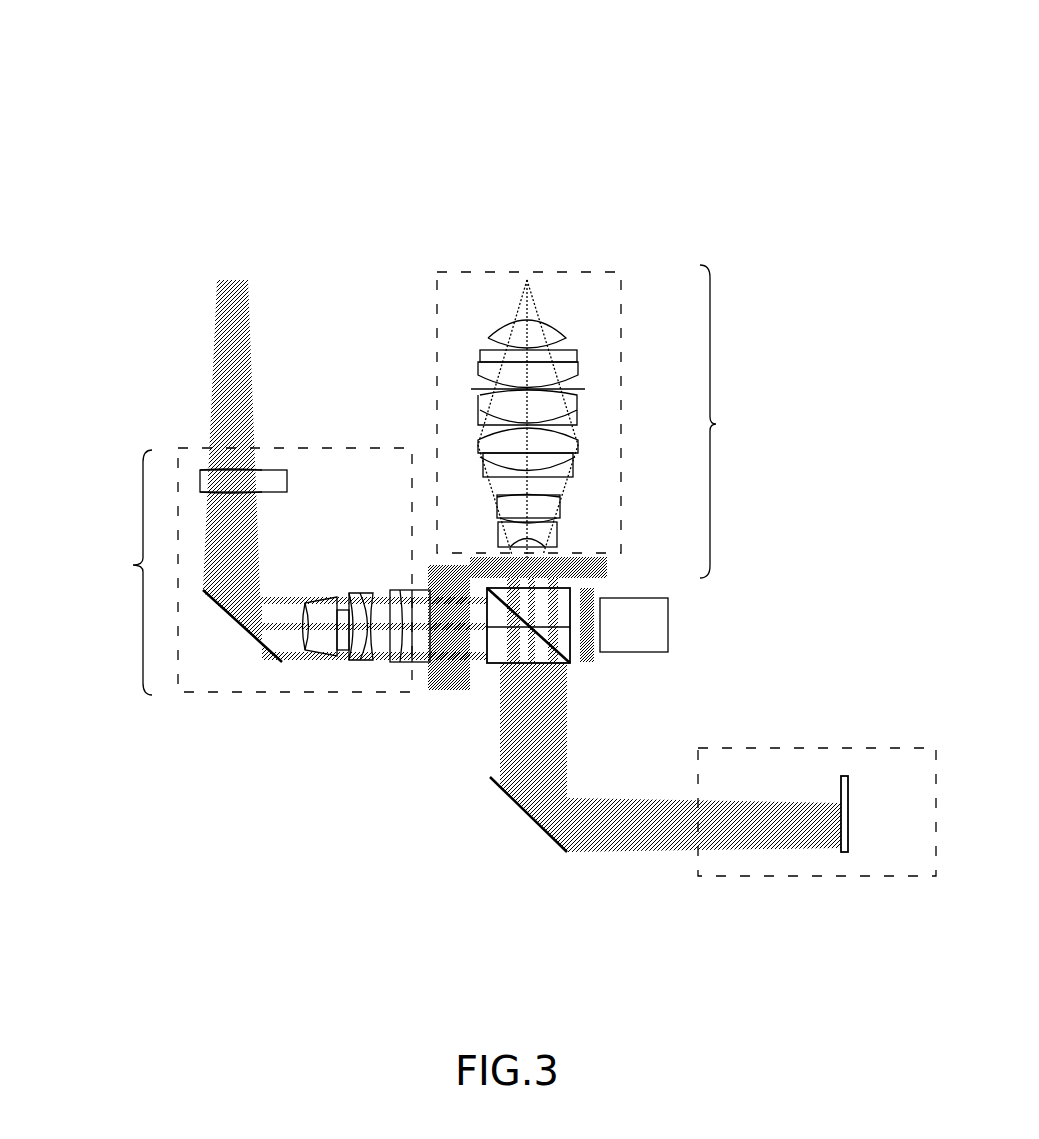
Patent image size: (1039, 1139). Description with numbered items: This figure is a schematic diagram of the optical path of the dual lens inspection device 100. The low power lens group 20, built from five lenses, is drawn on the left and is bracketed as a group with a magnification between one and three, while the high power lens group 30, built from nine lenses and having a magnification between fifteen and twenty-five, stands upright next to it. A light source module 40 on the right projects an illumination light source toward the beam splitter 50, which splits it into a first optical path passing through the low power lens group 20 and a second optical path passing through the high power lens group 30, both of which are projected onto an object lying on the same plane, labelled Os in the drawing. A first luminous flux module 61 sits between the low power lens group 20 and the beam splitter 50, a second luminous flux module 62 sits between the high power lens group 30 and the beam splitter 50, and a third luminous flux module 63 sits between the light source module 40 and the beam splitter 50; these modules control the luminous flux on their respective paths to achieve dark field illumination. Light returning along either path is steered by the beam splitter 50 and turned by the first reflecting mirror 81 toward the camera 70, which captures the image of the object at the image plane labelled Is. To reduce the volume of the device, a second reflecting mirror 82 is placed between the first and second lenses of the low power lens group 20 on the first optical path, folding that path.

The dual lens inspection device 100 is at (168, 47).
The low power lens group 20 is at (317, 457).
The high power lens group 30 is at (597, 406).
The light source module 40 is at (633, 643).
The beam splitter 50 is at (562, 645).
The first luminous flux module 61 is at (445, 678).
The second luminous flux module 62 is at (590, 570).
The third luminous flux module 63 is at (586, 657).
The camera 70 is at (800, 860).
The first reflecting mirror 81 is at (495, 784).
The second reflecting mirror 82 is at (282, 662).
The object surface Os is at (233, 280).
The image surface Is is at (846, 782).